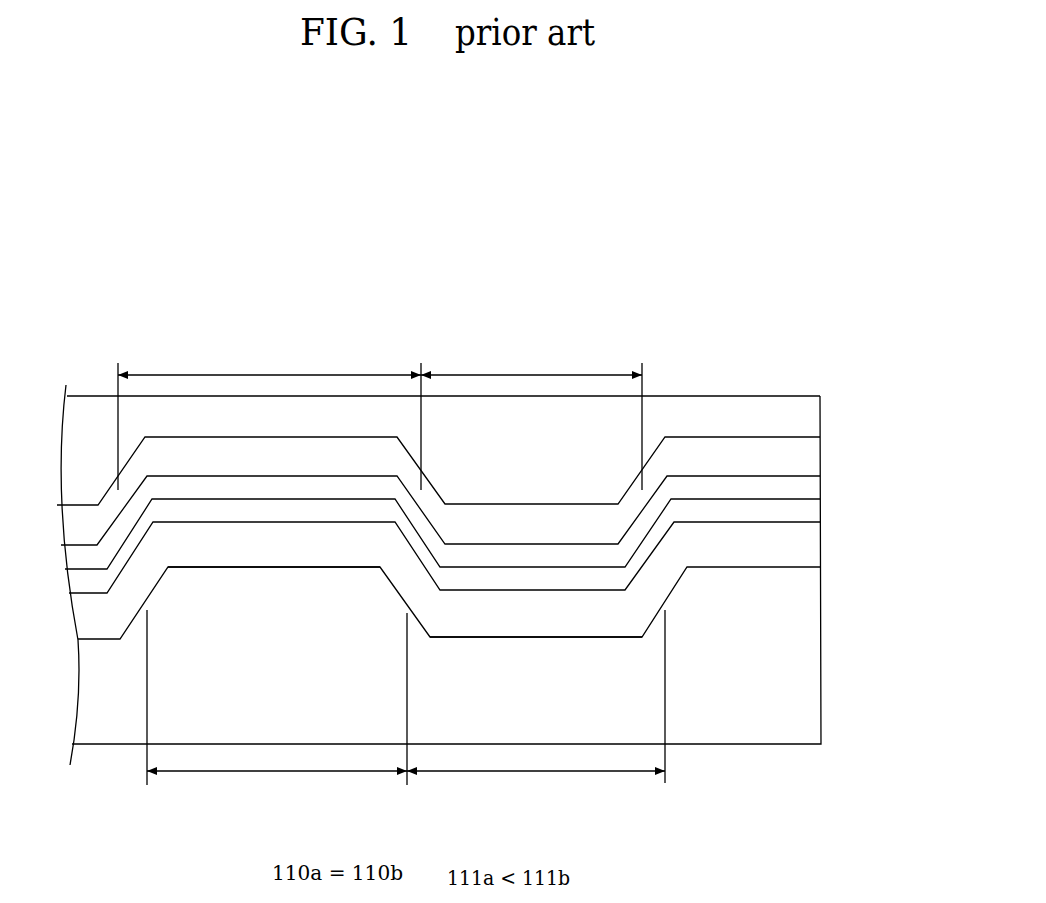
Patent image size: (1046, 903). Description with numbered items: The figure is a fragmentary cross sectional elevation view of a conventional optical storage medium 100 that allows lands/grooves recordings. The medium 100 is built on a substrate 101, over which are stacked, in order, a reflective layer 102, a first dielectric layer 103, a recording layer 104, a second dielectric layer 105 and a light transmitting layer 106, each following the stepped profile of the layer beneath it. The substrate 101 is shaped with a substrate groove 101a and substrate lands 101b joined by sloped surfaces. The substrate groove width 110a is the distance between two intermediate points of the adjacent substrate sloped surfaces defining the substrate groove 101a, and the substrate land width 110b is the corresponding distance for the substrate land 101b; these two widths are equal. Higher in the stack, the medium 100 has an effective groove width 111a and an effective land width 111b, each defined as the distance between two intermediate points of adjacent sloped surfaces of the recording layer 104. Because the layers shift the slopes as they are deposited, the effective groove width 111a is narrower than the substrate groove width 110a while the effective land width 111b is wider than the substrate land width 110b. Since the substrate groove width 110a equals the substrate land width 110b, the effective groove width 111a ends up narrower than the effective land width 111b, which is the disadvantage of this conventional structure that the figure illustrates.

The medium 100 is at (735, 370).
The substrate 101 is at (812, 670).
The substrate groove 101a is at (532, 637).
The substrate land 101b is at (312, 567).
The reflective layer 102 is at (808, 549).
The first dielectric layer 103 is at (810, 511).
The recording layer 104 is at (810, 486).
The second dielectric layer 105 is at (807, 454).
The light transmitting layer 106 is at (810, 417).
The substrate groove width 110a is at (536, 708).
The substrate land width 110b is at (277, 708).
The effective groove width 111a is at (531, 416).
The effective land width 111b is at (269, 416).